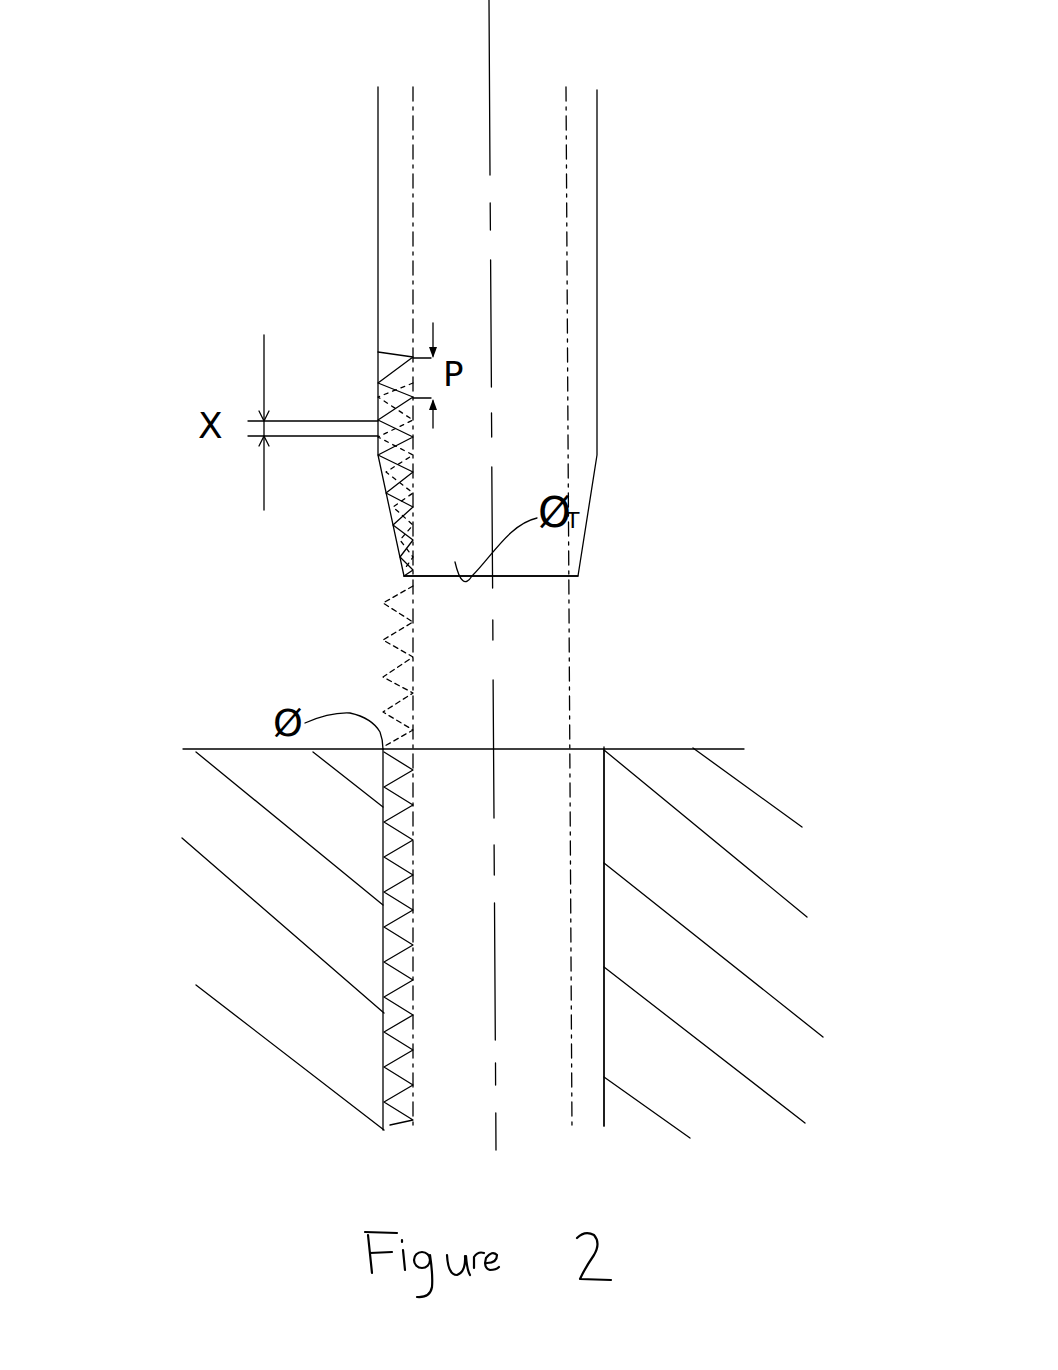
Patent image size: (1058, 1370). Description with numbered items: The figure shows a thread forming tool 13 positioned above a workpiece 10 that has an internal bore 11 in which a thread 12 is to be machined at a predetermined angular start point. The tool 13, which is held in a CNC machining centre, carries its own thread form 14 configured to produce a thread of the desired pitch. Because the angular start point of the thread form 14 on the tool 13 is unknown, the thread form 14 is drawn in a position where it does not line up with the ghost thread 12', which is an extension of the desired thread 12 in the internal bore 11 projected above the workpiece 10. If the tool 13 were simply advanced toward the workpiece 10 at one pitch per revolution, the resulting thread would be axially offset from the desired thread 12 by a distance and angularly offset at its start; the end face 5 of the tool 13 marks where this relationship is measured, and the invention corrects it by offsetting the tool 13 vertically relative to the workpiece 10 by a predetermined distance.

The bolt end face 5 is at (578, 577).
The workpiece 10 is at (225, 749).
The internal bore 11 is at (602, 797).
The thread 12 is at (341, 969).
The ghost thread 12' is at (321, 666).
The tool 13 is at (620, 207).
The thread form 14 is at (398, 352).